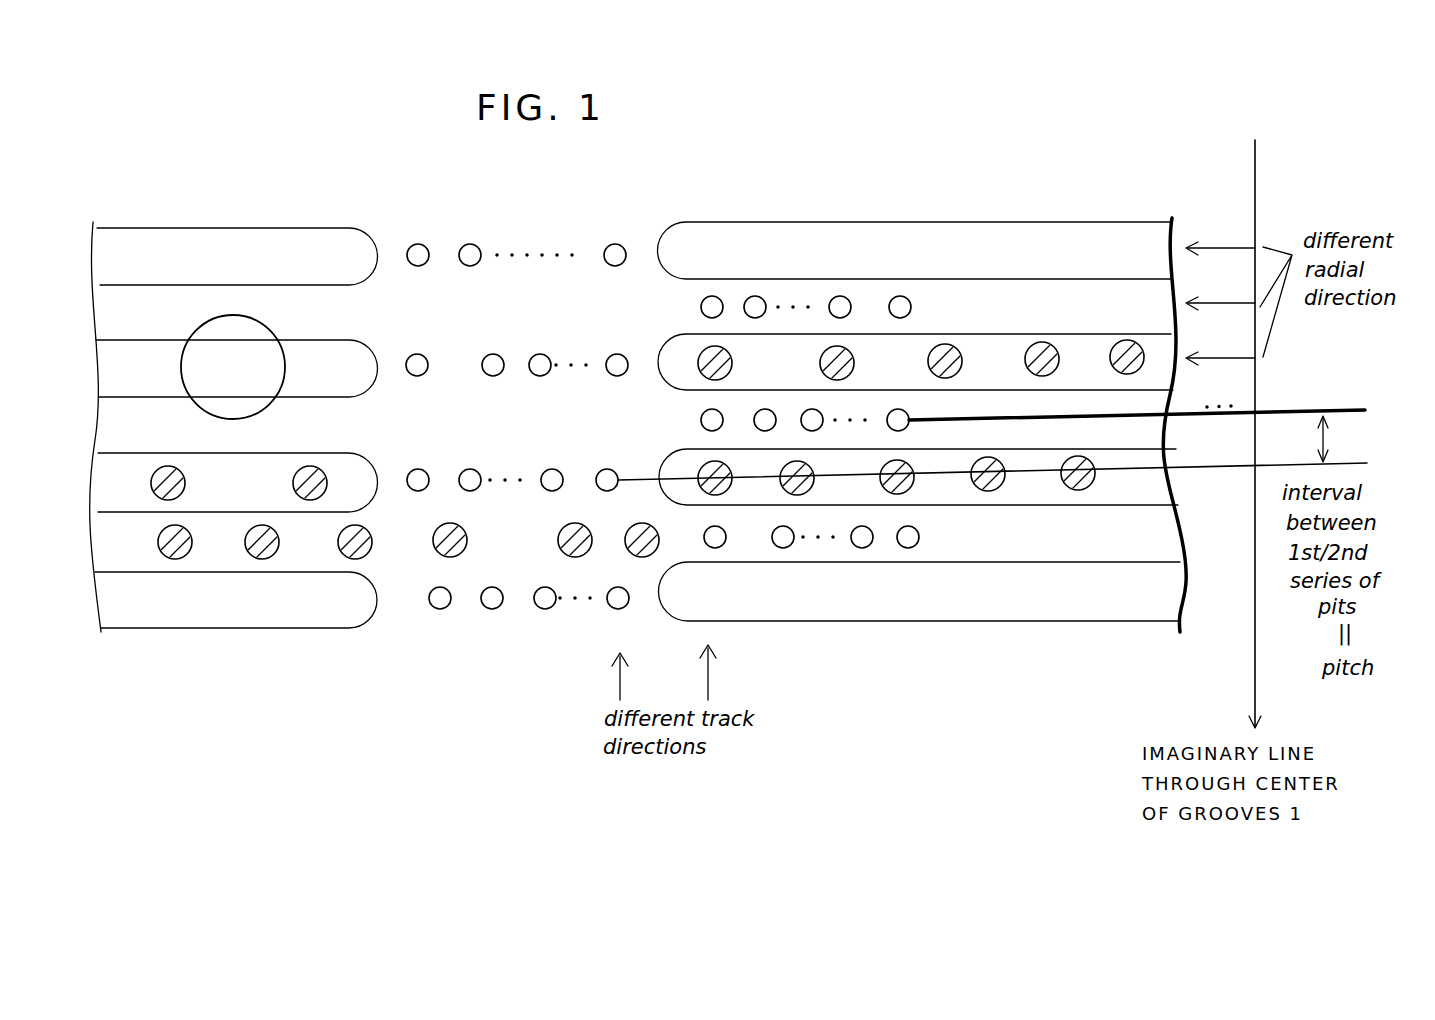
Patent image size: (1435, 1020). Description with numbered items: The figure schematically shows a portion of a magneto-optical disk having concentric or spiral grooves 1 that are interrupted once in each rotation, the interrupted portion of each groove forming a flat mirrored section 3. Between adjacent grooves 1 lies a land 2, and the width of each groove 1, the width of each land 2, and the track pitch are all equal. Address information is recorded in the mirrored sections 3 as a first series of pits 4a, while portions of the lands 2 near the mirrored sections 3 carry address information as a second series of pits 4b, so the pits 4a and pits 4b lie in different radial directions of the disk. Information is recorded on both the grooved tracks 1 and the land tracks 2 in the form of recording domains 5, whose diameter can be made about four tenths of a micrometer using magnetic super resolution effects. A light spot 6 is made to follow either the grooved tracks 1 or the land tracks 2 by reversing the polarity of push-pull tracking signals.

The groove 1 is at (290, 242).
The land 2 is at (145, 310).
The mirrored section 3 is at (538, 238).
The pits (first series of pits) 4a is at (428, 245).
The pits (second series of pits) 4b is at (755, 296).
The recording domain 5 is at (1028, 350).
The light spot 6 is at (247, 316).